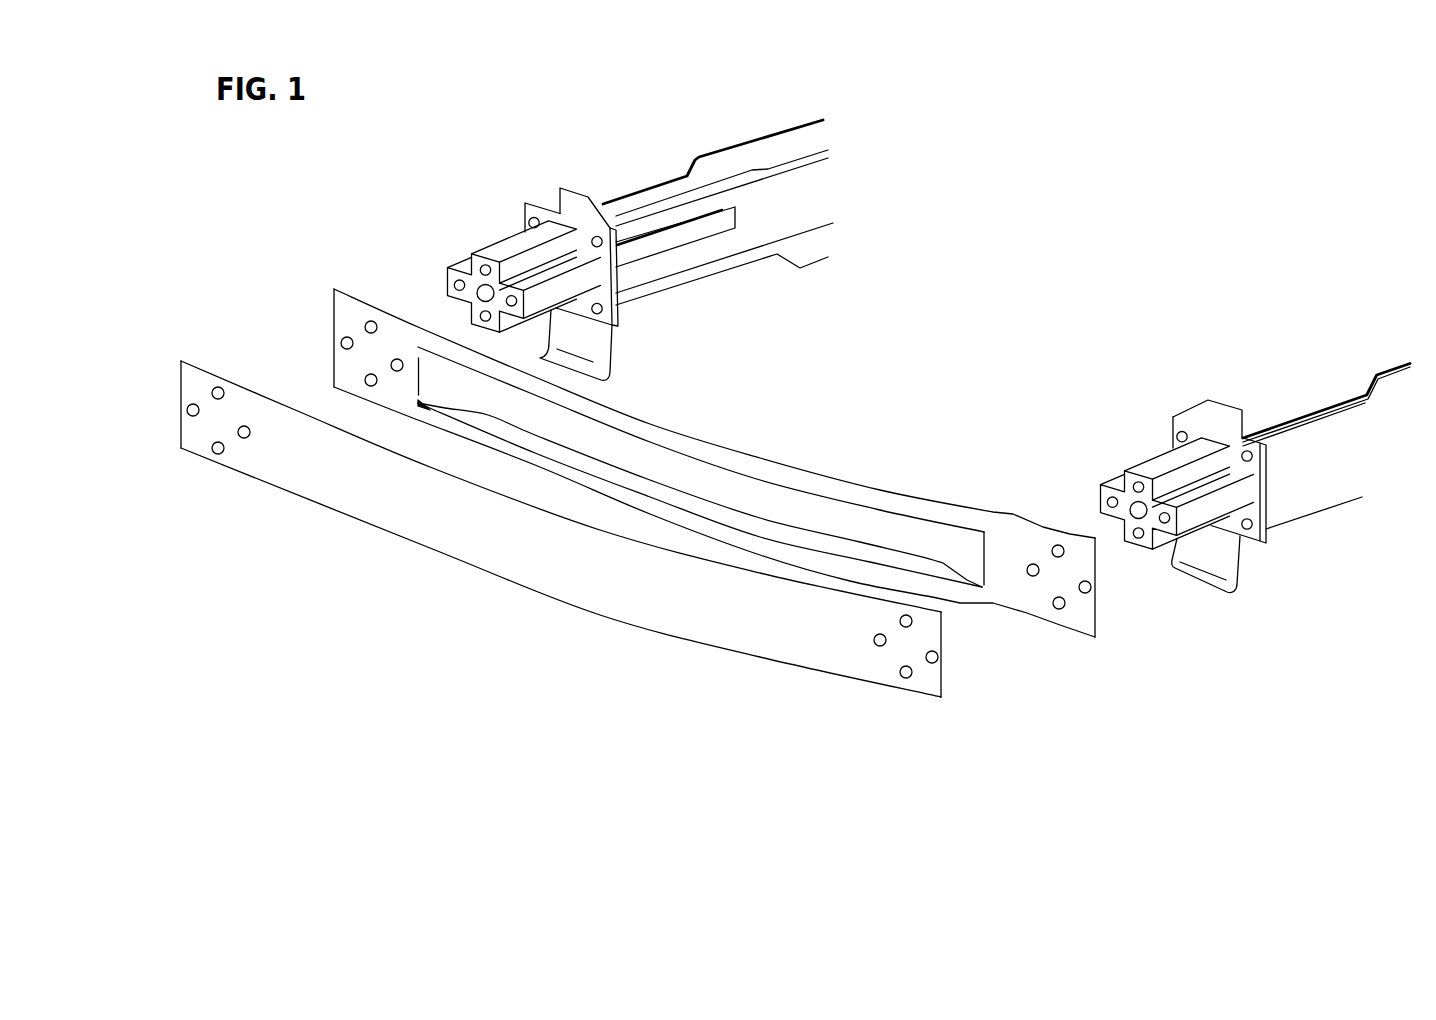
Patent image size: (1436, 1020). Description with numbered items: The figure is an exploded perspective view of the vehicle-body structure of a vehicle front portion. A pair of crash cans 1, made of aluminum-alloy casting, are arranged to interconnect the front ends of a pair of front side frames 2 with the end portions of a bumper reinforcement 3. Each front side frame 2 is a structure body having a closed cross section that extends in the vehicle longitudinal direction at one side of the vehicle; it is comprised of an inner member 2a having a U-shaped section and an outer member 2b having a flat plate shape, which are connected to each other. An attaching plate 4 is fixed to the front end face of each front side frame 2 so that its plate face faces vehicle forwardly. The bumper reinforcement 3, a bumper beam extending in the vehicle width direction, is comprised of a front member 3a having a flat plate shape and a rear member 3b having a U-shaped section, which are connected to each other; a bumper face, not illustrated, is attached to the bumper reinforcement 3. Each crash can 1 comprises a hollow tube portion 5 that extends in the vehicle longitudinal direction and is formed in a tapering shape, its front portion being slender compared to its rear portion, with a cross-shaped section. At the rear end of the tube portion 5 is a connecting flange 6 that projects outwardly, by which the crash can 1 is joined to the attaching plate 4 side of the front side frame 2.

The crash can 1 is at (481, 253).
The front side frame 2 is at (740, 144).
The inner member 2a is at (757, 233).
The outer member 2b is at (637, 188).
The bumper reinforcement 3 is at (638, 501).
The front member 3a is at (498, 565).
The rear member 3b is at (767, 458).
The attaching plate 4 is at (563, 203).
The tube portion 5 is at (507, 252).
The connecting flange 6 is at (607, 305).